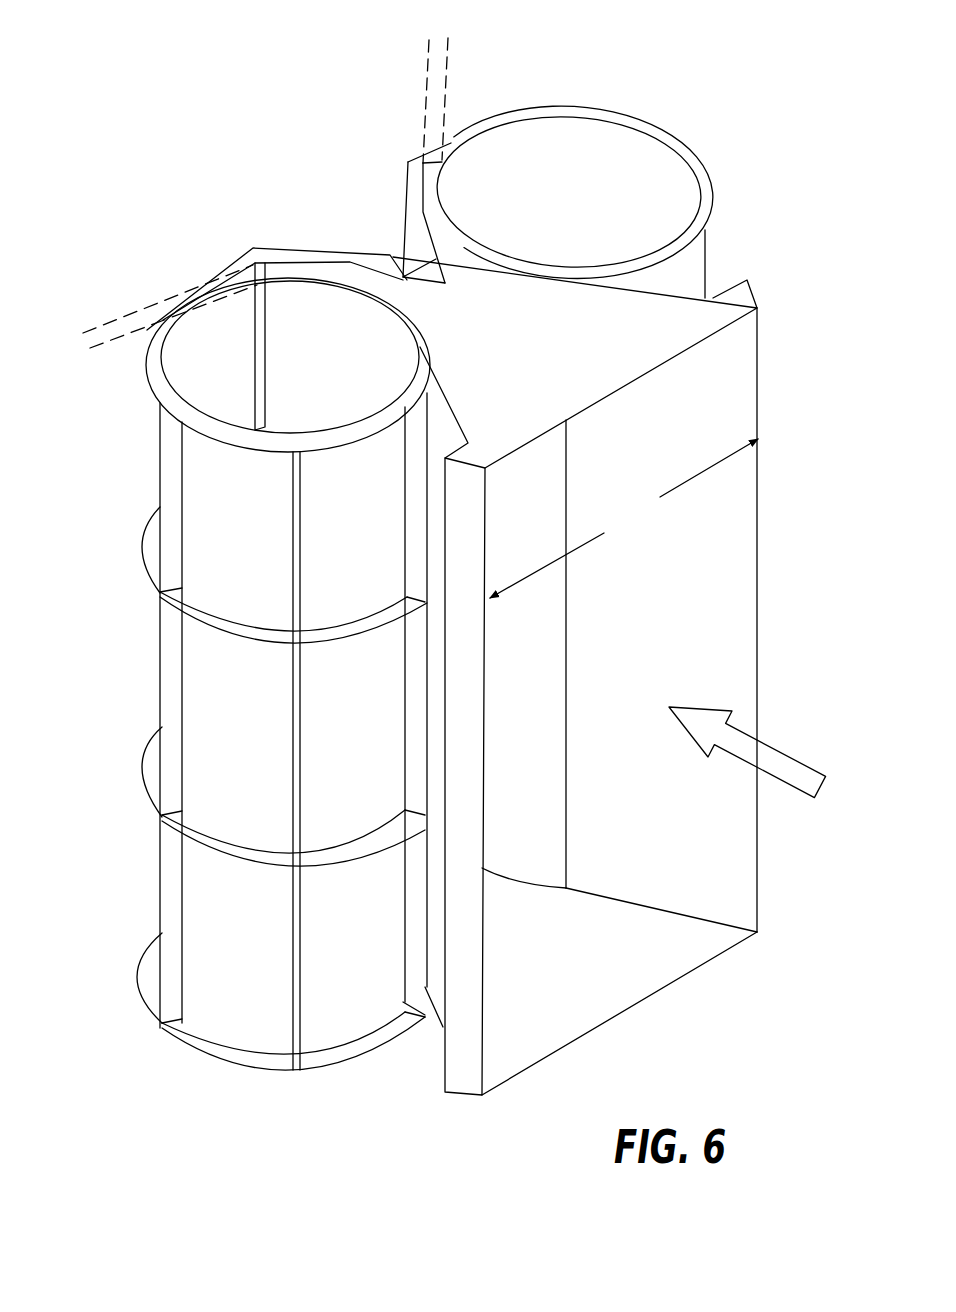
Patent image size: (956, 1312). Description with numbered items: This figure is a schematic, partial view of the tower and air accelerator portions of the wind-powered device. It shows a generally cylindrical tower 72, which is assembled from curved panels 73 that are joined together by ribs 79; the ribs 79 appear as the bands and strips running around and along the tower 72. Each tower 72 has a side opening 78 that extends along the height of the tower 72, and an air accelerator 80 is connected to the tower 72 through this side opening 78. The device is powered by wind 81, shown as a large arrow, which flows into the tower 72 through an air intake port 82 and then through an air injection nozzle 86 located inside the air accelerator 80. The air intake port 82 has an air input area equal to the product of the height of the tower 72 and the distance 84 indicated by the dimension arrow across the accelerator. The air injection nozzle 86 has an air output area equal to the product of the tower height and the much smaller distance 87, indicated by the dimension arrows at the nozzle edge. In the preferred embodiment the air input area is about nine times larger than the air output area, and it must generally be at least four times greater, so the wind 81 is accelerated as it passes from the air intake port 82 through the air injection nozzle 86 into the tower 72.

The tower 72 is at (715, 180).
The curved panel 73 is at (193, 510).
The side opening 78 is at (448, 250).
The rib 79 is at (300, 608).
The air accelerator 80 is at (763, 544).
The wind 81 is at (802, 758).
The air intake port 82 is at (763, 393).
The air intake port width distance 84 is at (624, 518).
The air injection nozzle 86 is at (444, 166).
The air injection nozzle width distance 87 is at (393, 48).